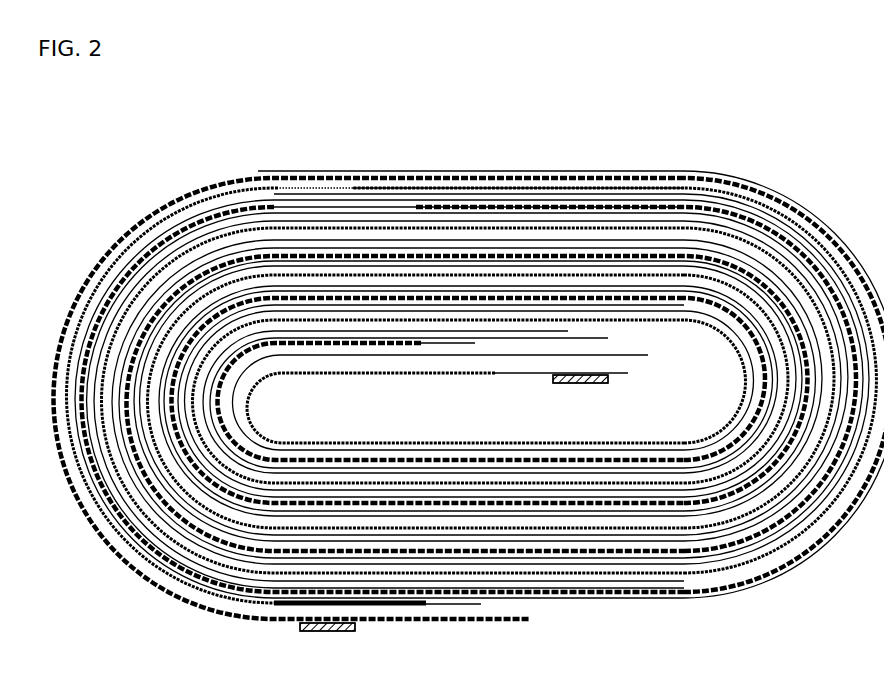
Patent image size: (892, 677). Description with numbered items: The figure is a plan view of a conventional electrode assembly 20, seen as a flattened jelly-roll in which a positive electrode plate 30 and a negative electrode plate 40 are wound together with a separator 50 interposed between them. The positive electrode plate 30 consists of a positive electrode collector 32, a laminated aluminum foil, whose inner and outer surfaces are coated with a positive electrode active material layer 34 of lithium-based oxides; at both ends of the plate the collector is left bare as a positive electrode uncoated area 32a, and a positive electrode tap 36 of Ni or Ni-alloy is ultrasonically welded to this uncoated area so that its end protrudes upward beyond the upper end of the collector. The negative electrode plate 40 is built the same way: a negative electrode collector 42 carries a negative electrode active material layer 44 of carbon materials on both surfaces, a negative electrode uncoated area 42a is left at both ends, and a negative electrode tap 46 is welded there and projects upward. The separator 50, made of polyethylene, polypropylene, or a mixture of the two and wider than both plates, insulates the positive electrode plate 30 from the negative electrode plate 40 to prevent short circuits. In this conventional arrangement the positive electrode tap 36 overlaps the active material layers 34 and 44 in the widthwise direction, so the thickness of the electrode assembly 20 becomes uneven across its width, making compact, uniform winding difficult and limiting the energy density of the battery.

The electrode assembly 20 is at (765, 150).
The positive electrode plate 30 is at (481, 192).
The positive electrode collector 32 is at (530, 197).
The positive electrode uncoated area 32a is at (411, 196).
The positive electrode active material layer 34 is at (582, 207).
The positive electrode tap 36 is at (347, 619).
The negative electrode plate 40 is at (338, 174).
The negative electrode collector 42 is at (362, 177).
The negative electrode uncoated area 42a is at (278, 183).
The negative electrode active material layer 44 is at (406, 173).
The negative electrode tap 46 is at (600, 372).
The separator 50 is at (252, 166).